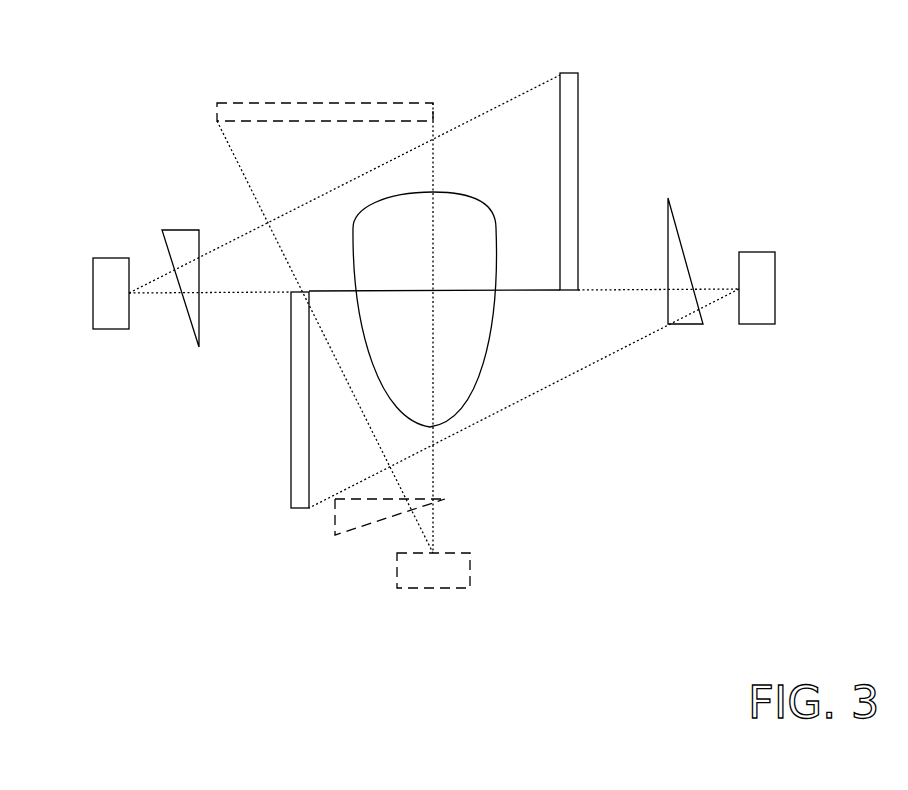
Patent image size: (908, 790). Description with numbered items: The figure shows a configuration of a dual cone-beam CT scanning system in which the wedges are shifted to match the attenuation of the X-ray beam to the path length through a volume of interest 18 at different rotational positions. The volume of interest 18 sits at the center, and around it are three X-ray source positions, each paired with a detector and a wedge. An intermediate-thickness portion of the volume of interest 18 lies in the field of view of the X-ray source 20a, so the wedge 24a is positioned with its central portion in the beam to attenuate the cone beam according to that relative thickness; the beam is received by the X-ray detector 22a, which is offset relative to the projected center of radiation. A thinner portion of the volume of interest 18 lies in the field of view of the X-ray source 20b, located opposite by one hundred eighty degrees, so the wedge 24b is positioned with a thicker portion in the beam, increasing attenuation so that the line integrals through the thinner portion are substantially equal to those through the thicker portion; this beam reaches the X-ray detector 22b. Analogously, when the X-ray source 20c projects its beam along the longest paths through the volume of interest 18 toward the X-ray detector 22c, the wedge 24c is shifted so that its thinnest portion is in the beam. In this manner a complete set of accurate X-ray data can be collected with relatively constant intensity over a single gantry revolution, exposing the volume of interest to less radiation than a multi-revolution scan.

The volume of interest 18 is at (438, 320).
The X-ray source 20a is at (93, 275).
The X-ray source 20b is at (775, 277).
The X-ray source 20c is at (398, 565).
The X-ray detector 22a is at (569, 73).
The X-ray detector 22b is at (291, 480).
The X-ray detector 22c is at (333, 103).
The wedge 24a is at (183, 230).
The wedge 24b is at (685, 325).
The wedge 24c is at (446, 498).